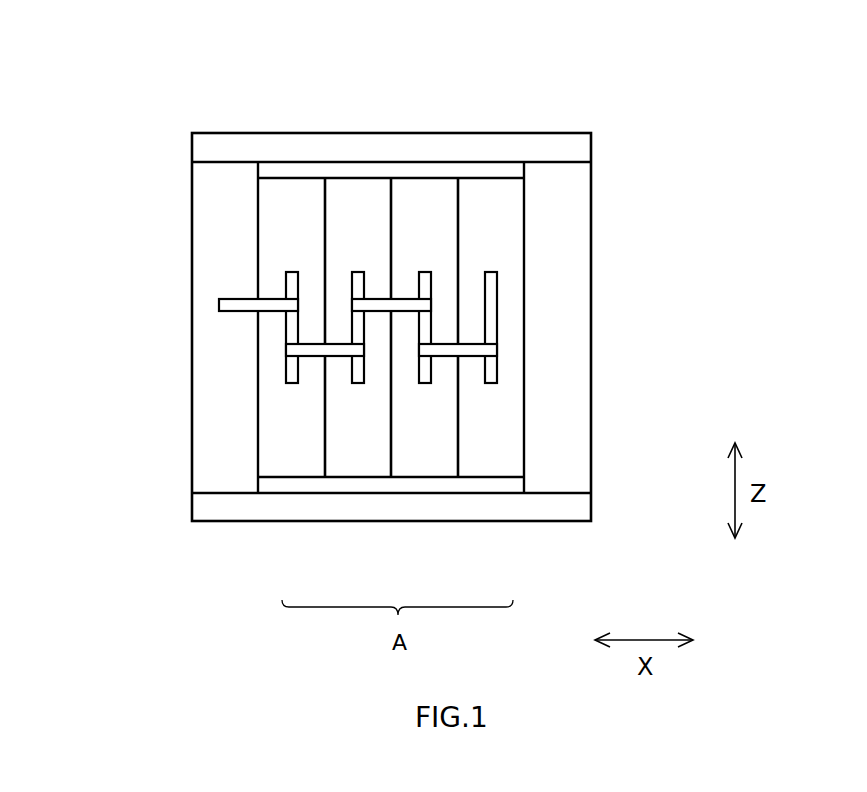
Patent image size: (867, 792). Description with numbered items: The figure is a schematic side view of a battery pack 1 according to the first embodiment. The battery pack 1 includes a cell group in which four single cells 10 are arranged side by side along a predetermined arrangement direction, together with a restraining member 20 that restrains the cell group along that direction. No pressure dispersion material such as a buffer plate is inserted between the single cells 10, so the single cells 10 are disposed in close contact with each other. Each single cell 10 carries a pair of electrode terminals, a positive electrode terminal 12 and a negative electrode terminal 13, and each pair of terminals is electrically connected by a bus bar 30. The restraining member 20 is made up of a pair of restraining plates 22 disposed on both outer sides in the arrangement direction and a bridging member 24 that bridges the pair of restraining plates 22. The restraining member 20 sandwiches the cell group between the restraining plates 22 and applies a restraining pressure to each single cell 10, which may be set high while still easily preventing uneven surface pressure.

The battery pack 1 is at (140, 37).
The single cell 10 is at (288, 462).
The positive electrode terminal 12 is at (425, 271).
The negative electrode terminal 13 is at (357, 271).
The restraining member 20 is at (677, 133).
The restraining plate 22 is at (583, 190).
The bridging member 24 is at (583, 150).
The bus bar 30 is at (382, 300).